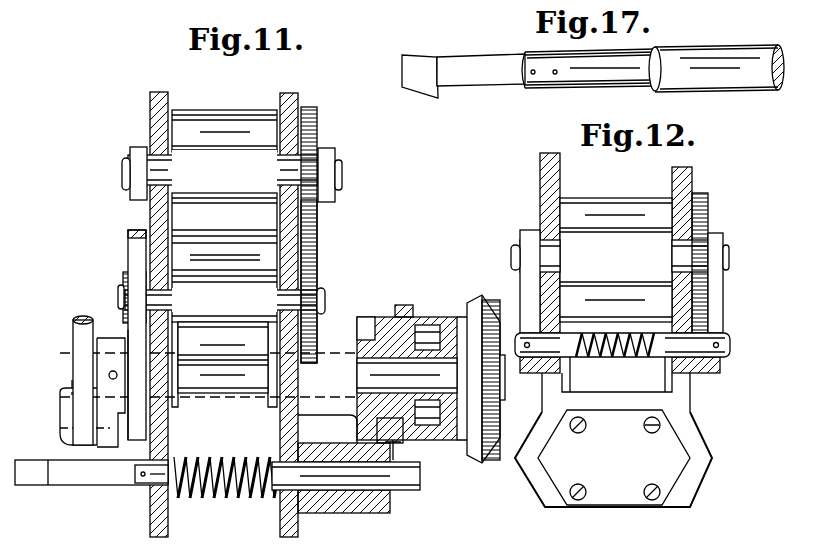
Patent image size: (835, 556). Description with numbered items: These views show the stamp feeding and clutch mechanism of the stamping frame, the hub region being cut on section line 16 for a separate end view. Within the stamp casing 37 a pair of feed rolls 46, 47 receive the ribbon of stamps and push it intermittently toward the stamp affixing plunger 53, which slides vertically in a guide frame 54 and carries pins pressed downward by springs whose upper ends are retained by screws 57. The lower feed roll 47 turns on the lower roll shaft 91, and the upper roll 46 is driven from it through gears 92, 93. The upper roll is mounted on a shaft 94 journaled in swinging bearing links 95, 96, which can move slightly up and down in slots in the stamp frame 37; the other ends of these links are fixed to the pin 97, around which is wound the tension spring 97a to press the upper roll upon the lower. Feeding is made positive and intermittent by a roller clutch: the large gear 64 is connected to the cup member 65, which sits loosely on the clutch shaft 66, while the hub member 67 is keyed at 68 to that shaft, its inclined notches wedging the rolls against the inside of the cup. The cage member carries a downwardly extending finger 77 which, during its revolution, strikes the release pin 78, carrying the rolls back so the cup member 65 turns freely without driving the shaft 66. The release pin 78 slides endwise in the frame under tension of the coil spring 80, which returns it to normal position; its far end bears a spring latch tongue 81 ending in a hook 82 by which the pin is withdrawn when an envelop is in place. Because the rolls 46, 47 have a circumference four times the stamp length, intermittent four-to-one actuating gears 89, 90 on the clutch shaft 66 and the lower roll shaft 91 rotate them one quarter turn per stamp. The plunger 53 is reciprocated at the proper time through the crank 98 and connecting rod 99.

In FIG. 11, the section line 16 is at (383, 378).
In FIG. 12, the stamp casing 37 is at (552, 173).
In FIG. 11, the feed roll 46 is at (178, 128).
In FIG. 12, the feed roll 46 is at (600, 212).
In FIG. 11, the feed roll 47 is at (190, 292).
In FIG. 12, the plunger 53 is at (605, 492).
In FIG. 12, the guide frame 54 is at (702, 468).
In FIG. 12, the screws 57 is at (645, 486).
In FIG. 11, the large gear 64 is at (475, 460).
In FIG. 11, the cup member 65 is at (455, 452).
In FIG. 11, the clutch shaft 66 is at (213, 378).
In FIG. 12, the clutch shaft 66 is at (520, 391).
In FIG. 11, the hub member 67 is at (360, 318).
In FIG. 11, the key 68 is at (440, 330).
In FIG. 11, the finger 77 is at (403, 452).
In FIG. 11, the release pin 78 is at (400, 492).
In FIG. 17, the release pin 78 is at (698, 58).
In FIG. 11, the coil spring 80 is at (232, 456).
In FIG. 11, the spring latch tongue 81 is at (95, 487).
In FIG. 17, the spring latch tongue 81 is at (470, 65).
In FIG. 11, the hook 82 is at (42, 487).
In FIG. 17, the hook 82 is at (428, 95).
In FIG. 11, the intermittent actuating gear 89 is at (135, 378).
In FIG. 11, the intermittent actuating gear 90 is at (133, 258).
In FIG. 11, the lower roll shaft 91 is at (122, 298).
In FIG. 11, the gear 92 is at (318, 255).
In FIG. 11, the gear 93 is at (315, 125).
In FIG. 12, the gear 93 is at (702, 198).
In FIG. 12, the shaft 94 is at (727, 258).
In FIG. 11, the swinging bearing link 95 is at (330, 160).
In FIG. 12, the swinging bearing link 95 is at (717, 293).
In FIG. 11, the swinging bearing link 96 is at (135, 165).
In FIG. 12, the swinging bearing link 96 is at (528, 282).
In FIG. 12, the pin 97 is at (732, 347).
In FIG. 12, the tension spring 97a is at (617, 374).
In FIG. 11, the crank 98 is at (108, 415).
In FIG. 11, the connecting rod 99 is at (80, 350).